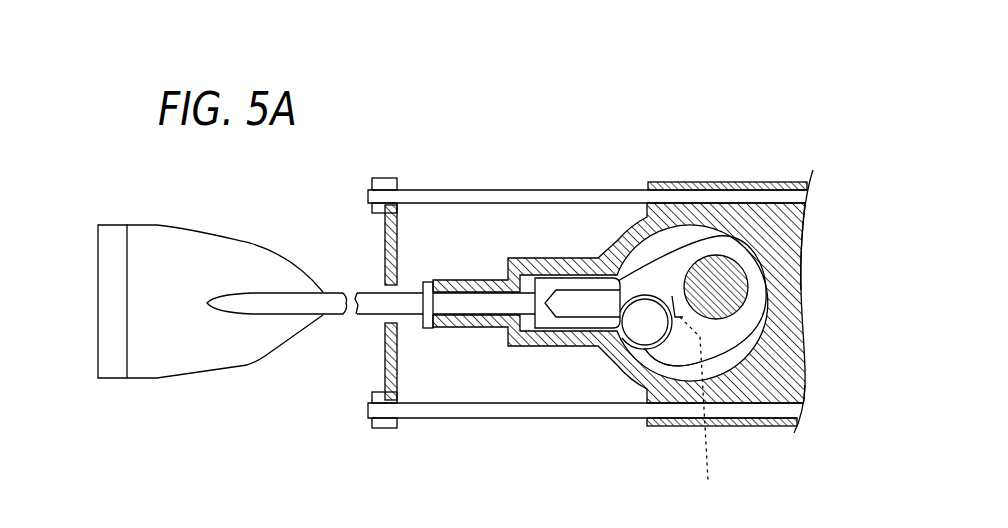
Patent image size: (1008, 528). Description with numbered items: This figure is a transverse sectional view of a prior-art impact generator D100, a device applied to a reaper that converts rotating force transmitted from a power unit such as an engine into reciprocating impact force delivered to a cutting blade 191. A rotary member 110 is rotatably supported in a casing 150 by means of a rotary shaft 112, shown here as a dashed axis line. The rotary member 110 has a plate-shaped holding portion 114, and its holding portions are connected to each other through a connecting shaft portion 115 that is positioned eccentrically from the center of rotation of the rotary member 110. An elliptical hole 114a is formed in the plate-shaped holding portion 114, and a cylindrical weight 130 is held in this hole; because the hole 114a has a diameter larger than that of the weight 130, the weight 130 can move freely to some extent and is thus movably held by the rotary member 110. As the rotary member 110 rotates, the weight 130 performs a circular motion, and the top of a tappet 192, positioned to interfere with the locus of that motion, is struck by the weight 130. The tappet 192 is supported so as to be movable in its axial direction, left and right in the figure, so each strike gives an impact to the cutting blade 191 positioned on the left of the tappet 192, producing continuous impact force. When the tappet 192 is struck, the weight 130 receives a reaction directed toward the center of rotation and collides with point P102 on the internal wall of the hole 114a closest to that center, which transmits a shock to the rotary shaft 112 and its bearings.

The impact generator D100 is at (459, 106).
The cutting blade 191 is at (223, 345).
The tappet 192 is at (545, 320).
The casing 150 is at (760, 213).
The elliptical hole 114a is at (672, 308).
The point on internal wall P102 is at (672, 295).
The weight 130 is at (648, 333).
The rotary member 110 is at (750, 310).
The connecting shaft portion 115 is at (733, 262).
The plate-shaped holding portion 114 is at (712, 333).
The rotary shaft 112 is at (711, 417).